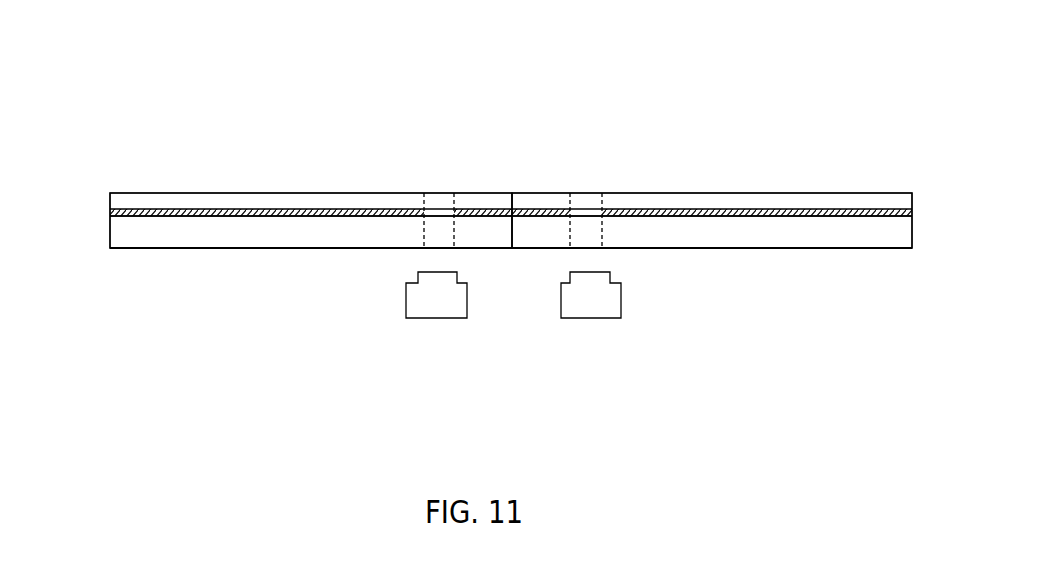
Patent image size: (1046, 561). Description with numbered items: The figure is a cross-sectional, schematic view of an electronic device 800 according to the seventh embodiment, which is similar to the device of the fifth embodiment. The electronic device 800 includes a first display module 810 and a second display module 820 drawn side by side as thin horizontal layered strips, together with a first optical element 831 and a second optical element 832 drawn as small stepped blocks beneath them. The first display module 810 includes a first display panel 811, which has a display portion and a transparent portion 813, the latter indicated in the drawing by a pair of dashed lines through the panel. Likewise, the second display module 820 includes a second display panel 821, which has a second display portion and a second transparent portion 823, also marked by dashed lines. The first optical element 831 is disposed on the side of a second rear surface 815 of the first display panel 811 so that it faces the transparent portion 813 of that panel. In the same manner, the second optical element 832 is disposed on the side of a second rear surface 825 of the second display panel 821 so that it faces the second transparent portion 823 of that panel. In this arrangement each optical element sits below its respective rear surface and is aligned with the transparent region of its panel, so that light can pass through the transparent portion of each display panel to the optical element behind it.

The electronic device 800 is at (530, 46).
The first display module 810 is at (118, 200).
The first display panel 811 is at (167, 233).
The transparent portion of the first display panel 813 is at (437, 228).
The second rear surface of the first display panel 815 is at (308, 250).
The second display module 820 is at (893, 203).
The second display panel 821 is at (728, 230).
The second transparent portion 823 is at (583, 228).
The second rear surface of the second display panel 825 is at (815, 250).
The first optical element 831 is at (435, 310).
The second optical element 832 is at (605, 310).